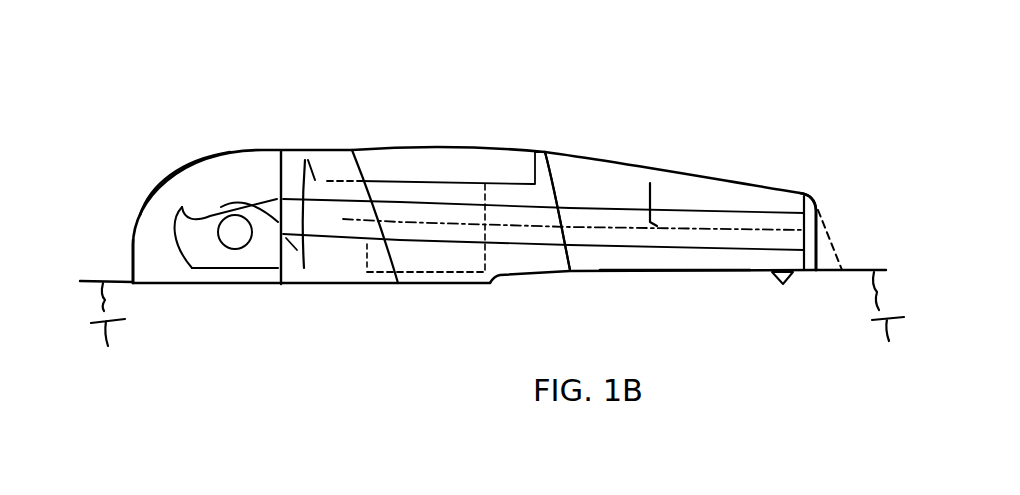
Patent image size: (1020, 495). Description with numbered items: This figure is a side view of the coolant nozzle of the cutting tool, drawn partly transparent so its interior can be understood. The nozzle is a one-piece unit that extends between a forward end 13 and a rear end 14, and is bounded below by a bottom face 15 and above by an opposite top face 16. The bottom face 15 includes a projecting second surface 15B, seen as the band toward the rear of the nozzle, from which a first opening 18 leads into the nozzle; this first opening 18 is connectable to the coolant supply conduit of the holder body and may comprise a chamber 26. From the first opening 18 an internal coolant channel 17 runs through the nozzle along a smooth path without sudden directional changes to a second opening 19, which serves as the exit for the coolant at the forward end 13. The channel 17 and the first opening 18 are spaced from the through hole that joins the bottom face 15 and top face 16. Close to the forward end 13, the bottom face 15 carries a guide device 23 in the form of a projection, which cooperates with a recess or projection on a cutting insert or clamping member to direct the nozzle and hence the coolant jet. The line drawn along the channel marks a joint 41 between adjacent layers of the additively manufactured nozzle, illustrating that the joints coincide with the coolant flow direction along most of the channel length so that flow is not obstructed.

The forward end 13 is at (817, 208).
The rear end 14 is at (133, 240).
The bottom face 15 is at (467, 298).
The second surface 15B is at (297, 286).
The top face 16 is at (543, 152).
The internal coolant channel 17 is at (675, 232).
The first opening 18 is at (244, 272).
The second opening 19 is at (842, 272).
The guide device 23 is at (788, 277).
The chamber 26 is at (177, 193).
The joint 41 is at (652, 180).